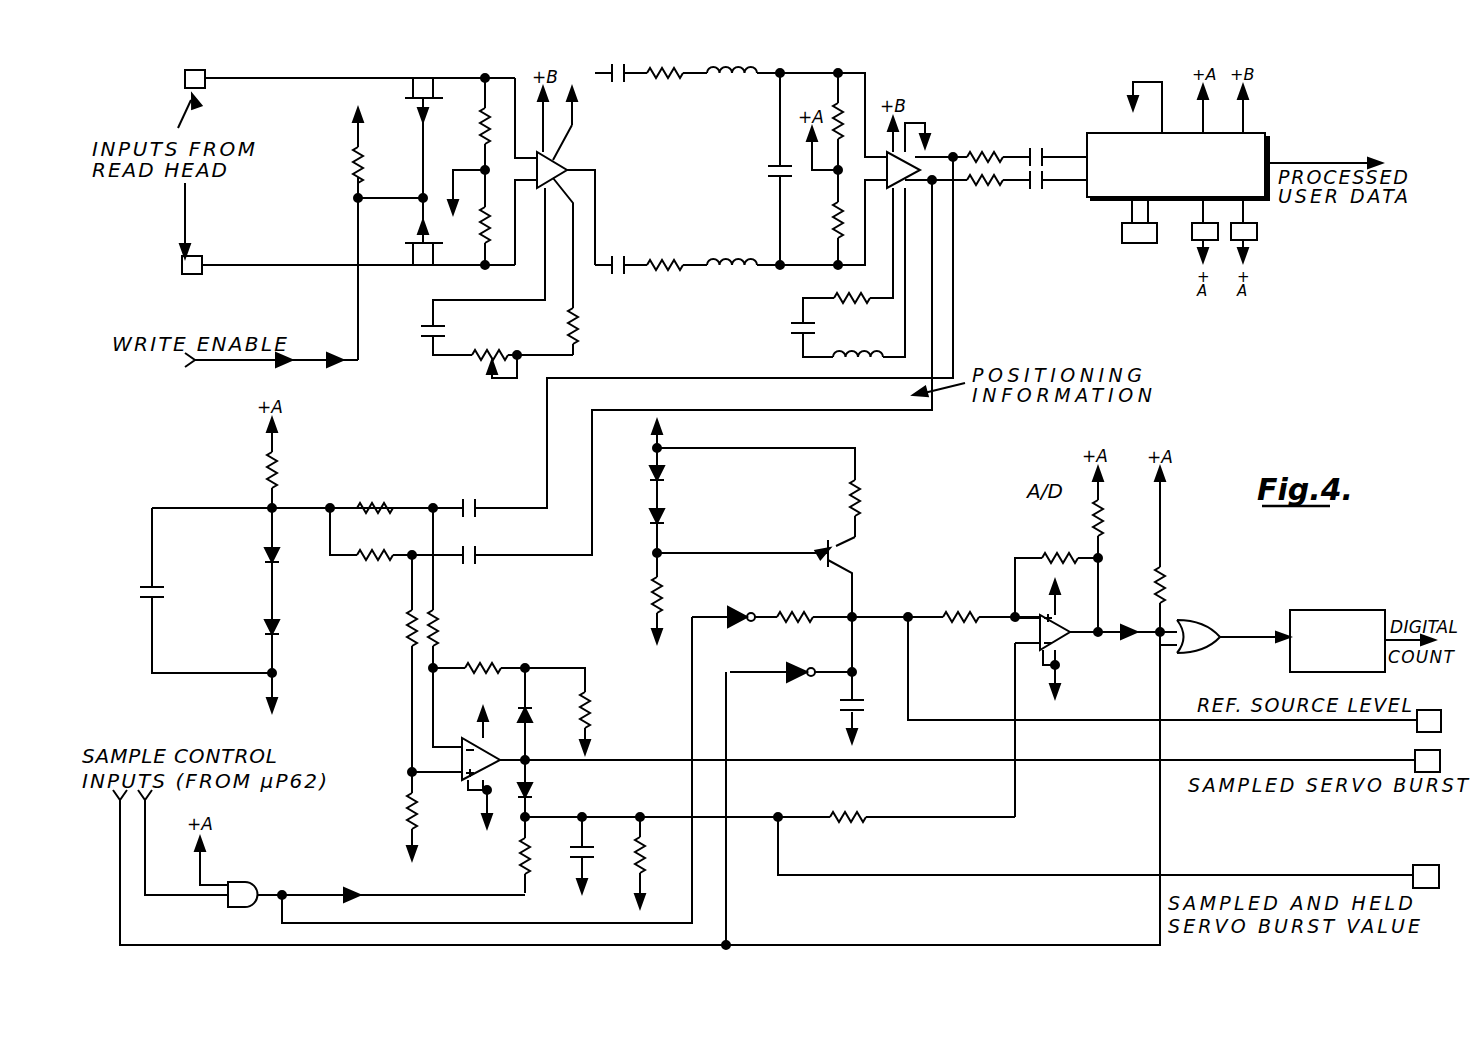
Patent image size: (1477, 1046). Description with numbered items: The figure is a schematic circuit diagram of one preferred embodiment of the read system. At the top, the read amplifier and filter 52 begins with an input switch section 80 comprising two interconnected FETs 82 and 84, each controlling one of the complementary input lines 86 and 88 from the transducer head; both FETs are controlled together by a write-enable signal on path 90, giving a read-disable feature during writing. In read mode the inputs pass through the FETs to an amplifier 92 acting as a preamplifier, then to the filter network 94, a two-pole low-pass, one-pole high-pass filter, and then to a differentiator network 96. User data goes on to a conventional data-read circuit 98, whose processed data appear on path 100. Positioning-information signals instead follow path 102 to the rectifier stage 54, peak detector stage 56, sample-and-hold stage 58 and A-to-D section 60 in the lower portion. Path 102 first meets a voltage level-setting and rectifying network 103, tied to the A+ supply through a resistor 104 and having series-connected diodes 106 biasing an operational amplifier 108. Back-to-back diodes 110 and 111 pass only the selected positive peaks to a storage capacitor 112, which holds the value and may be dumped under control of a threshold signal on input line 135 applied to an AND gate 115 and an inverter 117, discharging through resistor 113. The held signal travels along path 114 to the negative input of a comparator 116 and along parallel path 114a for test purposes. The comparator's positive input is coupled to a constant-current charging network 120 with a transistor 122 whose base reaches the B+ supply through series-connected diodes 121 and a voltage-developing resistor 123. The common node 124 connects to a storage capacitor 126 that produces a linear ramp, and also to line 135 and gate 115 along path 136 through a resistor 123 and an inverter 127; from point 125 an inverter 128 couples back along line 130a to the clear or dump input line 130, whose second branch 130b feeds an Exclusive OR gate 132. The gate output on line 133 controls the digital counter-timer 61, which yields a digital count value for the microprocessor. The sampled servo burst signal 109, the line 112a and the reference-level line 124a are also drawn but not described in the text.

The read amplifier and filter 52 is at (797, 42).
The rectifier stage 54 is at (558, 682).
The peak detector stage 56 is at (555, 709).
The sample-and-hold stage 58 is at (596, 820).
The A-to-D section 60 is at (1080, 538).
The digital counter-timer 61 is at (1365, 592).
The input switch section 80 is at (340, 185).
The FET 82 is at (420, 78).
The FET 84 is at (407, 266).
The input line 86 is at (272, 76).
The input line 88 is at (260, 263).
The write-enable path 90 is at (230, 362).
The amplifier 92 is at (553, 160).
The filter network 94 is at (702, 172).
The differentiator network 96 is at (940, 106).
The data-read circuit 98 is at (1105, 132).
The output path 100 is at (1322, 158).
The positioning information path 102 is at (970, 309).
The voltage level-setting and rectifying network 103 is at (295, 492).
The resistor 104 is at (268, 468).
The series-connected diodes 106 is at (265, 630).
The operational amplifier 108 is at (470, 738).
The sampled servo burst line 109 is at (1270, 742).
The diode 110 is at (530, 712).
The diode 111 is at (562, 775).
The storage capacitor 112 is at (578, 856).
The line 112a is at (1015, 680).
The resistor 113 is at (520, 854).
The path 114 is at (950, 815).
The parallel path 114a is at (1358, 848).
The AND gate 115 is at (247, 882).
The comparator 116 is at (1040, 612).
The inverter 117 is at (352, 888).
The constant-current charging network 120 is at (868, 432).
The series-connected diodes 121 is at (666, 470).
The transistor 122 is at (832, 545).
The resistor 123 is at (652, 592).
The common node 124 is at (858, 612).
The reference source level line 124a is at (1318, 723).
The point 125 is at (850, 667).
The storage capacitor 126 is at (840, 708).
The inverter 127 is at (750, 582).
The inverter 128 is at (785, 665).
The clear or dump input line 130 is at (212, 945).
The line 130a is at (728, 793).
The second branch 130b is at (945, 917).
The Exclusive OR gate 132 is at (1205, 622).
The output line 133 is at (1248, 637).
The threshold input line 135 is at (178, 893).
The path 136 is at (455, 922).